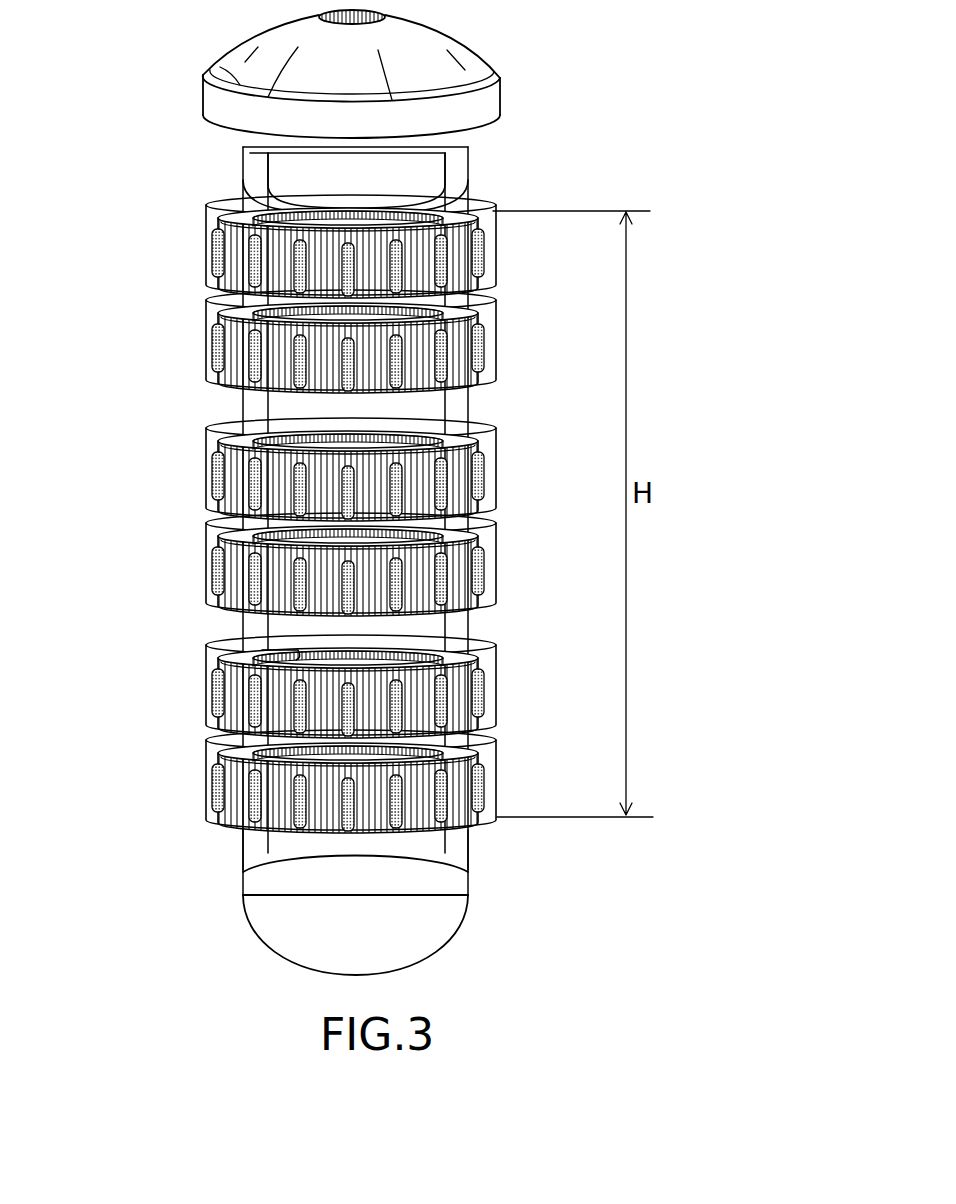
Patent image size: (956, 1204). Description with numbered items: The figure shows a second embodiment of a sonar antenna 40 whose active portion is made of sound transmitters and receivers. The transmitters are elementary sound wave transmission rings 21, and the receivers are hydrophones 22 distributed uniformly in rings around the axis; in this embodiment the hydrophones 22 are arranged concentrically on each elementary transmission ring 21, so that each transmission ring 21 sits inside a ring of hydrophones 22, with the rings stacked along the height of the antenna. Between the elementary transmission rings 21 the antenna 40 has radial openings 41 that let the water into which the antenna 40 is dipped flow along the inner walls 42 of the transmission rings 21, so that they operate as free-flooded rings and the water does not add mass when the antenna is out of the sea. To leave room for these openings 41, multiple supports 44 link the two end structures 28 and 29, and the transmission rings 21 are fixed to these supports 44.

The antenna 40 is at (133, 178).
The structure 29 is at (450, 175).
The openings 41 is at (205, 412).
The elementary transmission rings 21 is at (418, 365).
The hydrophones 22 is at (210, 358).
The inner walls 42 is at (262, 650).
The supports 44 is at (253, 846).
The structure 28 is at (443, 940).